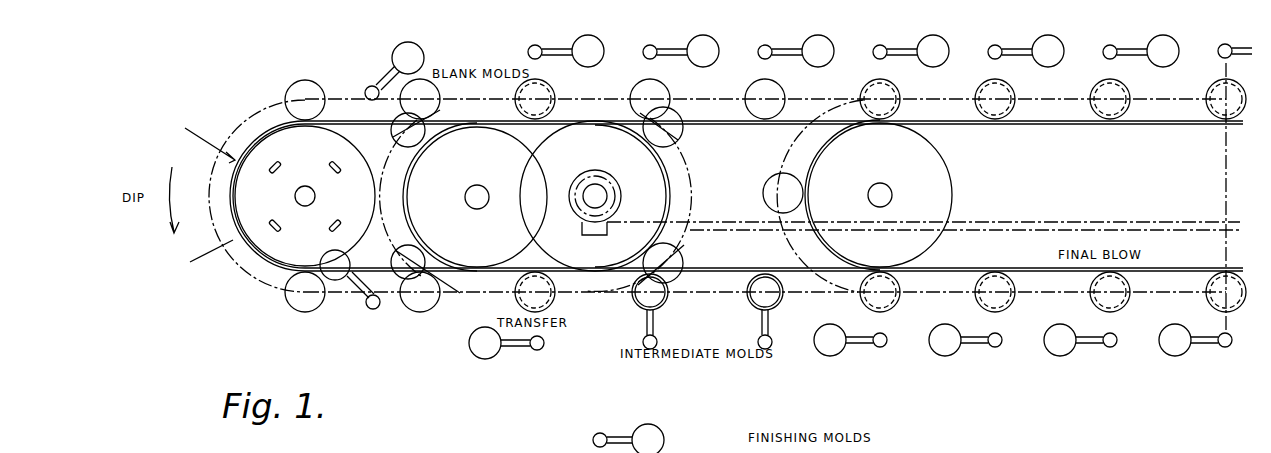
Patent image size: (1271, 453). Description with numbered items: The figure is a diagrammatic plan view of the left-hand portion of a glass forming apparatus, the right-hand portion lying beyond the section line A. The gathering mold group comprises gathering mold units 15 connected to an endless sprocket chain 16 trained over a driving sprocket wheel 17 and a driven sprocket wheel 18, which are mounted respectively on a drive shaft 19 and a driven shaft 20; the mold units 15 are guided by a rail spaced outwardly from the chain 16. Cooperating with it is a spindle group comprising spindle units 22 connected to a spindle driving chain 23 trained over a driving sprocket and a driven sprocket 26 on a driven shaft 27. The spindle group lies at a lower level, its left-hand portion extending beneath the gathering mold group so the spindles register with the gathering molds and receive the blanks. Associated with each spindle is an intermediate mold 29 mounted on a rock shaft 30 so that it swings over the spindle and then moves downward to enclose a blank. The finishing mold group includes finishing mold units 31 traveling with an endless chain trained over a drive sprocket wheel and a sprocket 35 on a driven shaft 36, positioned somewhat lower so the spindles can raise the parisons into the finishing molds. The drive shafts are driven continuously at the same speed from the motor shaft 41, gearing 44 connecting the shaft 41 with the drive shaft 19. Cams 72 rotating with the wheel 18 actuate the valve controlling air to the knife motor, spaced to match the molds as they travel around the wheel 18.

The gathering mold unit 15 is at (289, 91).
The endless sprocket chain 16 is at (347, 121).
The driving sprocket wheel 17 is at (605, 204).
The driven sprocket wheel 18 is at (305, 196).
The drive shaft 19 is at (603, 190).
The driven shaft 20 is at (316, 196).
The spindle unit 22 is at (749, 94).
The spindle driving chain 23 is at (721, 125).
The driven sprocket 26 is at (463, 198).
The driven shaft 27 is at (469, 206).
The intermediate mold 29 is at (424, 54).
The rock shaft 30 is at (370, 86).
The finishing mold unit 31 is at (763, 196).
The sprocket 35 is at (953, 195).
The driven shaft 36 is at (886, 190).
The motor shaft 41 is at (1106, 222).
The gearing 44 is at (605, 232).
The cam 72 is at (326, 232).
The section line A is at (1224, 146).